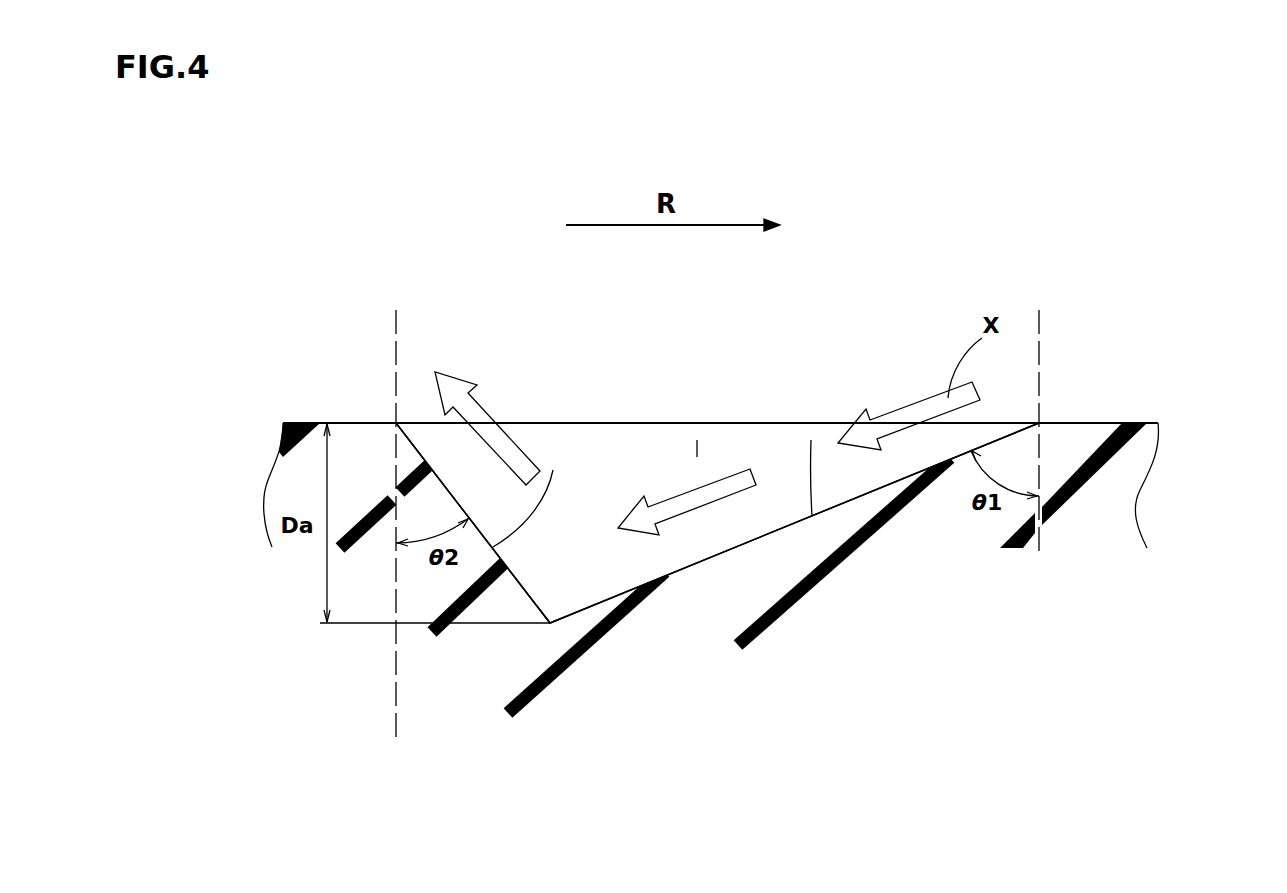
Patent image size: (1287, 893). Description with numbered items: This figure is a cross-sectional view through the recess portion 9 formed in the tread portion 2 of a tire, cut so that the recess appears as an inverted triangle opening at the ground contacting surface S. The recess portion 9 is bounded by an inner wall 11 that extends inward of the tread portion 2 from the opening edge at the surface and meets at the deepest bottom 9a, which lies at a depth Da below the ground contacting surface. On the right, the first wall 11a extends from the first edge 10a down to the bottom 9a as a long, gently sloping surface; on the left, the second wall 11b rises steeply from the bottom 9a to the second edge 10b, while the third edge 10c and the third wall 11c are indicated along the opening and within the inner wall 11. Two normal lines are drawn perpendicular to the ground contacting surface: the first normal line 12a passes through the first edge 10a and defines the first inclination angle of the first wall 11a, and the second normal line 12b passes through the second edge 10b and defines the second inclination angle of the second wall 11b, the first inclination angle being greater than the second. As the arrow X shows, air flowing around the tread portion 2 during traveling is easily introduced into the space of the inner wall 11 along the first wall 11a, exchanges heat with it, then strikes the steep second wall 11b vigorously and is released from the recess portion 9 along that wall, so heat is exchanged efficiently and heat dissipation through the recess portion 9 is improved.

The tread portion 2 is at (1133, 421).
The recess portion 9 is at (900, 383).
The bottom 9a is at (551, 622).
The first edge 10a is at (1037, 423).
The second edge 10b is at (396, 423).
The third edge 10c is at (780, 423).
The inner wall 11 is at (632, 462).
The first wall 11a is at (812, 516).
The second wall 11b is at (493, 547).
The third wall 11c is at (697, 457).
The first normal line 12a is at (1038, 417).
The second normal line 12b is at (399, 510).